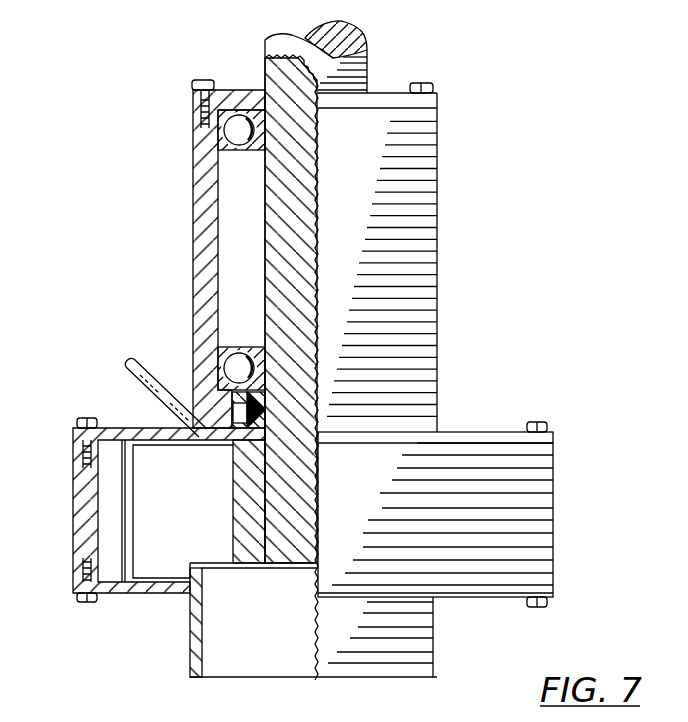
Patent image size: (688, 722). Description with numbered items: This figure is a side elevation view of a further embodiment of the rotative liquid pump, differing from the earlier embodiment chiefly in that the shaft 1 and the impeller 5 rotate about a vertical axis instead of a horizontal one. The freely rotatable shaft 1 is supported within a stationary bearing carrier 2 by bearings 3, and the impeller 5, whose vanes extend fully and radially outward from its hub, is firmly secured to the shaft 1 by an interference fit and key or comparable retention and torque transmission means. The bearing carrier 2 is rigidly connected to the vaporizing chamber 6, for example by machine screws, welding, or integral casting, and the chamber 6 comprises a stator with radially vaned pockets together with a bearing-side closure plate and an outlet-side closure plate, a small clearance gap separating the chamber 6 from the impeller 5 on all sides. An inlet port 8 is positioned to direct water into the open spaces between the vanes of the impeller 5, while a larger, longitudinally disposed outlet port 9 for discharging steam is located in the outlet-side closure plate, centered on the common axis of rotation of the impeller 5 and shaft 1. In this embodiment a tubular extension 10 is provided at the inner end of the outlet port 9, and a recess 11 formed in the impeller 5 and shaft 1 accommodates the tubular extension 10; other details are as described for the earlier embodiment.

The shaft 1 is at (368, 62).
The bearing carrier 2 is at (192, 263).
The bearings 3 is at (233, 92).
The impeller 5 is at (128, 538).
The vaporizing chamber 6 is at (558, 529).
The inlet port 8 is at (128, 365).
The outlet port 9 is at (234, 679).
The tubular extension 10 is at (195, 570).
The recess 11 is at (190, 565).